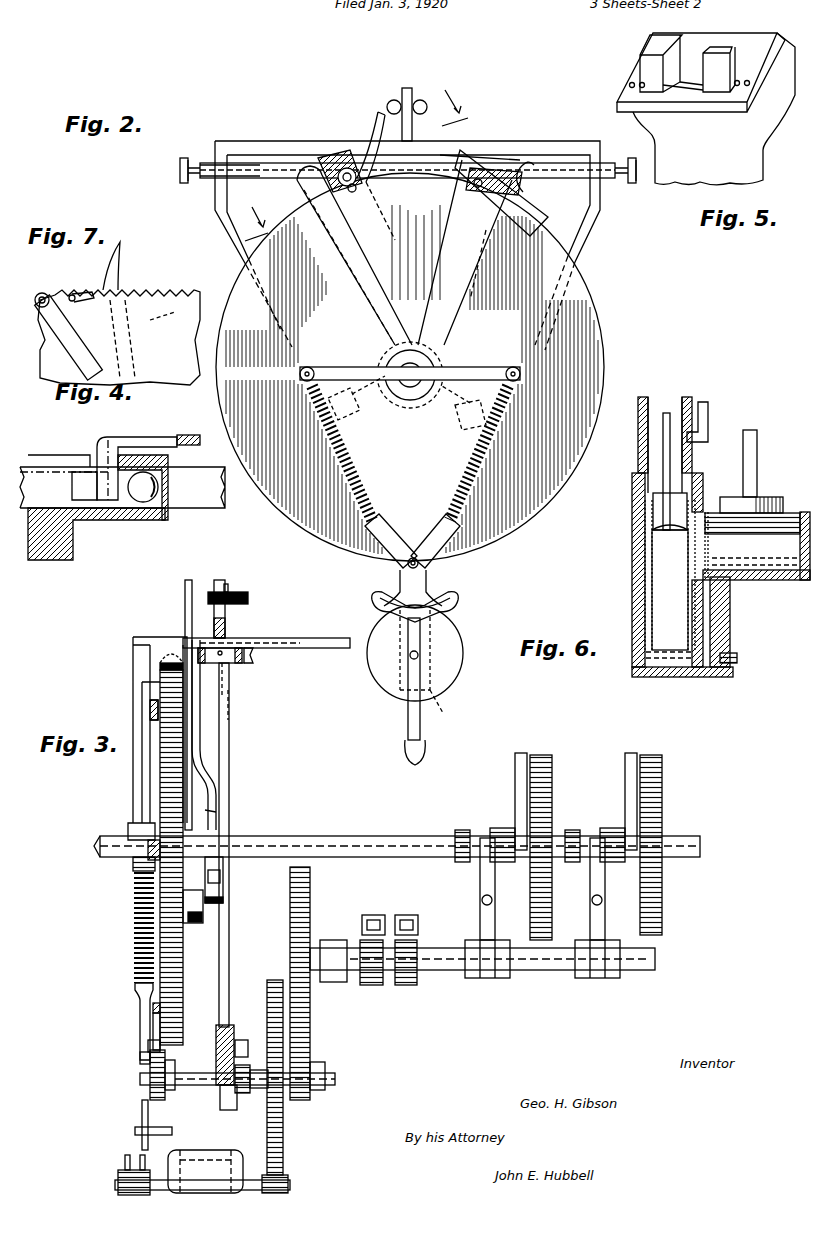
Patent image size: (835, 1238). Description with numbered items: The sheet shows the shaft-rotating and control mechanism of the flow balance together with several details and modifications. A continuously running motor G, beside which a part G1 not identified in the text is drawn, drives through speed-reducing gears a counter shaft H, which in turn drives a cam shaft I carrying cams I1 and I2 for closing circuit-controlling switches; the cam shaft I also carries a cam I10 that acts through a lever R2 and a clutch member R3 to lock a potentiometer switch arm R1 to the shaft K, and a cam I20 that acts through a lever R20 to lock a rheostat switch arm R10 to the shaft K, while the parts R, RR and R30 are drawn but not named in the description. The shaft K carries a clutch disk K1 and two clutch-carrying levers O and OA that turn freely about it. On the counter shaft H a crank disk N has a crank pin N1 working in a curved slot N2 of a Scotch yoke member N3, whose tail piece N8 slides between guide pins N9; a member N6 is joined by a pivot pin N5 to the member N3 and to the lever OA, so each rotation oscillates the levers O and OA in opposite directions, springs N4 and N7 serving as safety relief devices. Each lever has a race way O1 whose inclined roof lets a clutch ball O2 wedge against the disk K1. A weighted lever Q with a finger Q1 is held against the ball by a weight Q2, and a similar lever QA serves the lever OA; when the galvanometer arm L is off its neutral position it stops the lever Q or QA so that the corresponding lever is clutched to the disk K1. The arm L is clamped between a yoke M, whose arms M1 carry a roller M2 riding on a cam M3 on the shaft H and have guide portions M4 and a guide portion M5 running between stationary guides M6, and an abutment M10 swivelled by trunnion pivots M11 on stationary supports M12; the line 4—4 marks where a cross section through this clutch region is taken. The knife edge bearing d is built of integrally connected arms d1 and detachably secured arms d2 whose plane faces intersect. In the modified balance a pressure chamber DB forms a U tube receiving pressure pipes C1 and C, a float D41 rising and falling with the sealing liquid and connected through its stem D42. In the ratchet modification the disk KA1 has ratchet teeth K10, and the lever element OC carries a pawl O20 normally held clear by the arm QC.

In FIG. 2, the clutch disk K1 is at (410, 367).
In FIG. 3, the clutch disk K1 is at (170, 883).
In FIG. 4, the clutch disk K1 is at (122, 481).
In FIG. 2, the arms of yoke M1 is at (232, 216).
In FIG. 3, the arms of yoke M1 is at (229, 774).
In FIG. 2, the yoke M is at (495, 141).
In FIG. 3, the yoke M is at (228, 631).
In FIG. 2, the stationary supports M12 is at (183, 160).
In FIG. 3, the stationary supports M12 is at (256, 655).
In FIG. 2, the trunnion pivots M11 is at (182, 165).
In FIG. 3, the trunnion pivots M11 is at (230, 706).
In FIG. 2, the abutment member M10 is at (256, 166).
In FIG. 3, the abutment member M10 is at (232, 665).
In FIG. 2, the guide portion M5 is at (411, 92).
In FIG. 3, the guide portion M5 is at (222, 586).
In FIG. 2, the stationary guides M6 is at (391, 104).
In FIG. 3, the stationary guides M6 is at (248, 598).
In FIG. 2, the section line 4 is at (356, 169).
In FIG. 2, the finger Q1 is at (328, 232).
In FIG. 4, the finger Q1 is at (105, 478).
In FIG. 2, the weighted lever Q is at (370, 130).
In FIG. 3, the weighted lever Q is at (210, 800).
In FIG. 2, the race way O1 is at (340, 170).
In FIG. 4, the race way O1 is at (137, 505).
In FIG. 2, the clutch ball O2 is at (356, 193).
In FIG. 2, the clutch carrying lever OA is at (448, 312).
In FIG. 3, the clutch carrying lever OA is at (155, 804).
In FIG. 2, the clutch ball engaging lever QA is at (525, 195).
In FIG. 3, the clutch ball engaging lever QA is at (216, 812).
In FIG. 2, the galvanometer arm L is at (524, 158).
In FIG. 3, the galvanometer arm L is at (290, 638).
In FIG. 2, the shaft K is at (410, 380).
In FIG. 3, the shaft K is at (340, 836).
In FIG. 2, the clutch carrying lever O is at (378, 318).
In FIG. 3, the clutch carrying lever O is at (137, 668).
In FIG. 4, the clutch carrying lever O is at (70, 560).
In FIG. 2, the weight Q2 is at (362, 406).
In FIG. 3, the weight Q2 is at (224, 890).
In FIG. 4, the weight Q2 is at (192, 433).
In FIG. 2, the spring N4 is at (338, 456).
In FIG. 3, the spring N4 is at (134, 941).
In FIG. 2, the spring N7 is at (480, 467).
In FIG. 2, the Scotch yoke member N3 is at (395, 545).
In FIG. 3, the Scotch yoke member N3 is at (140, 1006).
In FIG. 2, the pivot pin N5 is at (435, 574).
In FIG. 3, the pivot pin N5 is at (147, 1046).
In FIG. 2, the connecting member N6 is at (430, 502).
In FIG. 3, the connecting member N6 is at (153, 1029).
In FIG. 2, the slot N2 is at (447, 612).
In FIG. 2, the crank pin N1 is at (445, 636).
In FIG. 3, the crank pin N1 is at (143, 1069).
In FIG. 2, the crank disk N is at (450, 663).
In FIG. 3, the crank disk N is at (165, 1068).
In FIG. 2, the tail piece N8 is at (405, 728).
In FIG. 2, the guide portions M4 is at (441, 710).
In FIG. 3, the guide portions M4 is at (222, 1086).
In FIG. 2, the guide pins N9 is at (418, 760).
In FIG. 3, the guide pins N9 is at (135, 1131).
In FIG. 3, the roller M2 is at (242, 1040).
In FIG. 3, the cam M3 is at (238, 1102).
In FIG. 3, the counter shaft H is at (190, 1086).
In FIG. 3, the motor G is at (220, 1151).
In FIG. 3, the pulley G1 is at (118, 1183).
In FIG. 3, the cam shaft I is at (366, 926).
In FIG. 3, the cam I1 is at (370, 986).
In FIG. 3, the cam I2 is at (402, 986).
In FIG. 3, the cam I10 is at (470, 979).
In FIG. 3, the cam I20 is at (580, 979).
In FIG. 3, the gear R is at (556, 820).
In FIG. 3, the potentiometer switch arm R1 is at (515, 792).
In FIG. 3, the lever R2 is at (495, 828).
In FIG. 3, the clutch member R3 is at (480, 881).
In FIG. 3, the gear RR is at (662, 806).
In FIG. 3, the rheostat switch arm R10 is at (625, 778).
In FIG. 3, the lever R20 is at (606, 828).
In FIG. 3, the crank R30 is at (605, 916).
In FIG. 7, the ratchet teeth K10 is at (152, 290).
In FIG. 7, the disk KA1 is at (172, 318).
In FIG. 7, the lever element OC is at (68, 352).
In FIG. 7, the pawl O20 is at (48, 292).
In FIG. 7, the arm QC is at (74, 294).
In FIG. 5, the knife edge bearing d is at (714, 109).
In FIG. 5, the arms d1 is at (718, 72).
In FIG. 5, the arms d2 is at (635, 72).
In FIG. 6, the pressure chamber DB is at (730, 637).
In FIG. 6, the float D41 is at (662, 584).
In FIG. 6, the stem D42 is at (670, 460).
In FIG. 6, the pressure pipe C1 is at (712, 415).
In FIG. 6, the pressure pipe C is at (758, 480).